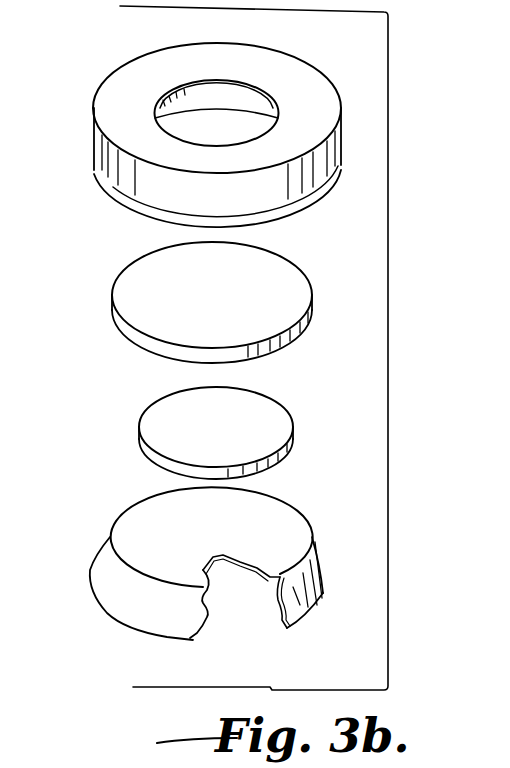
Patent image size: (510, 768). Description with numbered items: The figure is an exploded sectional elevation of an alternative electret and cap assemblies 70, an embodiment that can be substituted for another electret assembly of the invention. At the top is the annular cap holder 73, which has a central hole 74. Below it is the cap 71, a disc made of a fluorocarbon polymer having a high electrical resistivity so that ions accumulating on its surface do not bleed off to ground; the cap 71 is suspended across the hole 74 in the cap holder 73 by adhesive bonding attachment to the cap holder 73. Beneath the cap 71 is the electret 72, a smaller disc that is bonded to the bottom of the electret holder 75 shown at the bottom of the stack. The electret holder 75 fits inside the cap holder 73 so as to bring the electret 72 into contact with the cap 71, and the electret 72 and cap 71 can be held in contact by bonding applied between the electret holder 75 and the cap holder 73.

The electret and cap assemblies 70 is at (80, 296).
The cap 71 is at (140, 345).
The electret 72 is at (157, 432).
The cap holder 73 is at (98, 152).
The hole 74 is at (263, 93).
The electret holder 75 is at (110, 537).